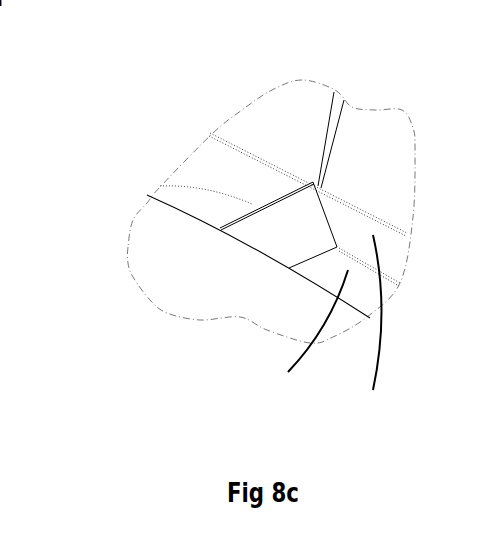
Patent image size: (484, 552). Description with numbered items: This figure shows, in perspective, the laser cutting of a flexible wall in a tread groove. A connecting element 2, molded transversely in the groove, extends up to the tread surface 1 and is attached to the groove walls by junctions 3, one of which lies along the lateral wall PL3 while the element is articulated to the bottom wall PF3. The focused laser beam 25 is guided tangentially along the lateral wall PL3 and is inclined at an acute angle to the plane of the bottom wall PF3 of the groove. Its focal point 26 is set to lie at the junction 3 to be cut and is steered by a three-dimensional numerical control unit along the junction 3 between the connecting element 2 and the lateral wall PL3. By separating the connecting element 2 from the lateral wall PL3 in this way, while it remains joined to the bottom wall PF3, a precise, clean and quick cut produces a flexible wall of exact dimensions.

The tread surface 1 is at (193, 270).
The connecting element 2 is at (272, 220).
The junction 3 is at (323, 210).
The focused laser beam 25 is at (340, 100).
The focal point 26 is at (318, 187).
The bottom wall PF3 is at (296, 331).
The lateral wall PL3 is at (373, 325).